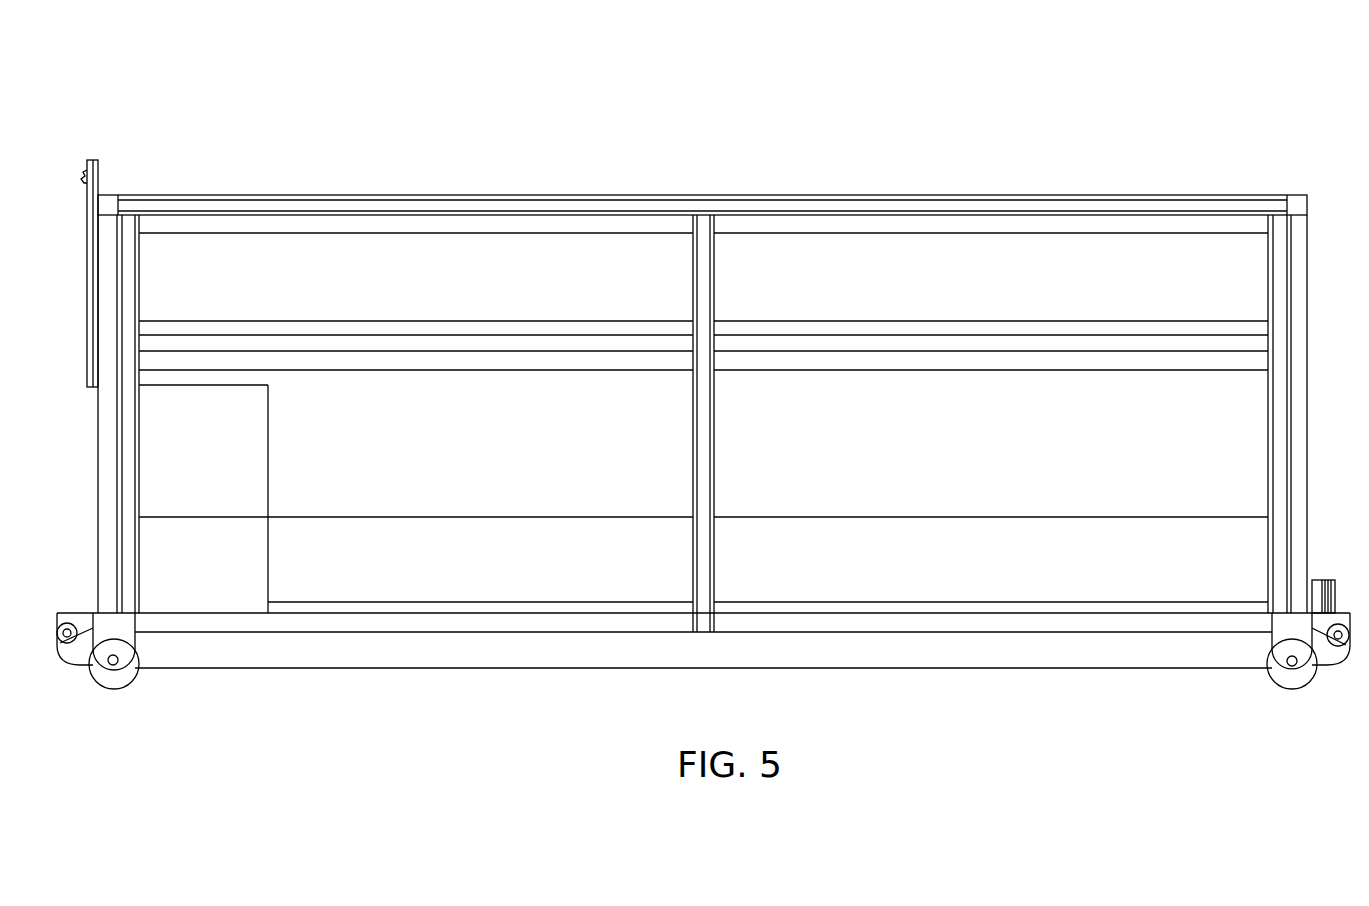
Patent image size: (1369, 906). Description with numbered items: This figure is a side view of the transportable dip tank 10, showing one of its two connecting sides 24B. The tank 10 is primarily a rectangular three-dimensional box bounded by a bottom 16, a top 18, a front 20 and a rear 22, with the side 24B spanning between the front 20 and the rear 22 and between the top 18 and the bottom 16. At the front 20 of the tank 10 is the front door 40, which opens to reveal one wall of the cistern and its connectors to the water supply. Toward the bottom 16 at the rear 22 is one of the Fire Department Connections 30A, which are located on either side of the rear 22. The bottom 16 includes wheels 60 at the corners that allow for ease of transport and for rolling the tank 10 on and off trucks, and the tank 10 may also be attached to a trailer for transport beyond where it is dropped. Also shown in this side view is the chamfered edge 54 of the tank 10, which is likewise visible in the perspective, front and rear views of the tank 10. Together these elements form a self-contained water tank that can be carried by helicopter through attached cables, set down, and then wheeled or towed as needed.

The transportable dip tank 10 is at (1216, 90).
The bottom 16 is at (545, 669).
The top 18 is at (532, 195).
The front 20 is at (98, 457).
The rear 22 is at (1297, 328).
The side 24B is at (912, 471).
The Fire Department Connection 30A is at (1336, 590).
The front door 40 is at (92, 292).
The chamfered edge 54 is at (875, 212).
The wheels 60 is at (113, 688).